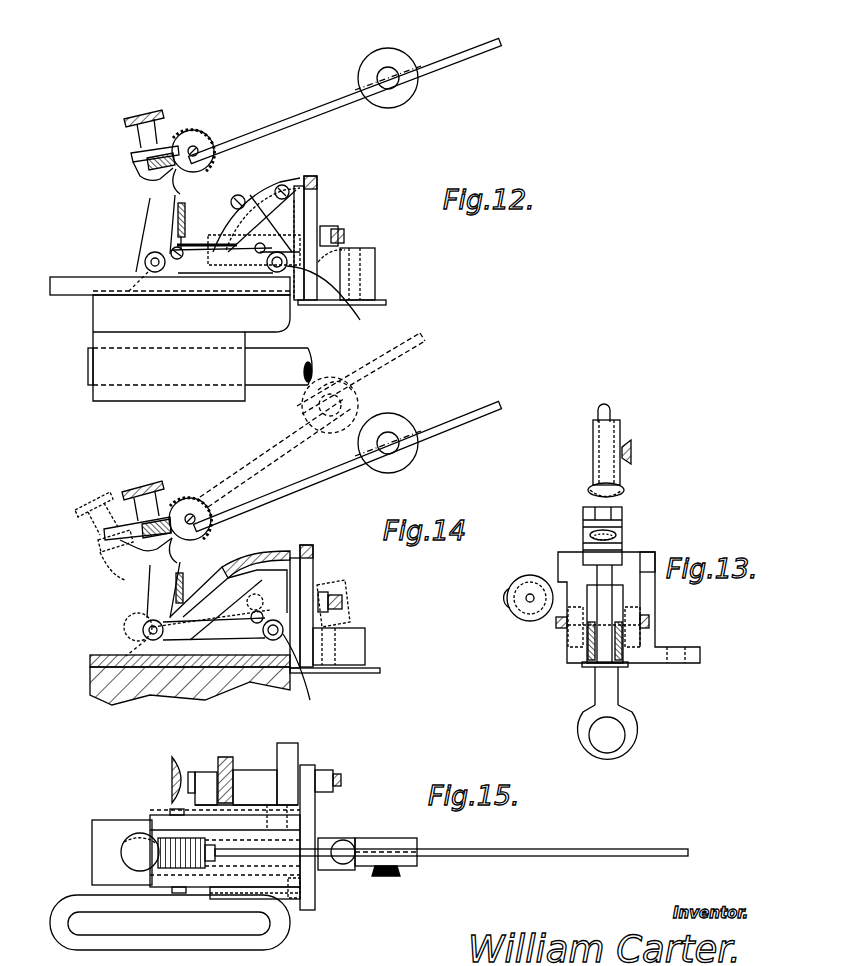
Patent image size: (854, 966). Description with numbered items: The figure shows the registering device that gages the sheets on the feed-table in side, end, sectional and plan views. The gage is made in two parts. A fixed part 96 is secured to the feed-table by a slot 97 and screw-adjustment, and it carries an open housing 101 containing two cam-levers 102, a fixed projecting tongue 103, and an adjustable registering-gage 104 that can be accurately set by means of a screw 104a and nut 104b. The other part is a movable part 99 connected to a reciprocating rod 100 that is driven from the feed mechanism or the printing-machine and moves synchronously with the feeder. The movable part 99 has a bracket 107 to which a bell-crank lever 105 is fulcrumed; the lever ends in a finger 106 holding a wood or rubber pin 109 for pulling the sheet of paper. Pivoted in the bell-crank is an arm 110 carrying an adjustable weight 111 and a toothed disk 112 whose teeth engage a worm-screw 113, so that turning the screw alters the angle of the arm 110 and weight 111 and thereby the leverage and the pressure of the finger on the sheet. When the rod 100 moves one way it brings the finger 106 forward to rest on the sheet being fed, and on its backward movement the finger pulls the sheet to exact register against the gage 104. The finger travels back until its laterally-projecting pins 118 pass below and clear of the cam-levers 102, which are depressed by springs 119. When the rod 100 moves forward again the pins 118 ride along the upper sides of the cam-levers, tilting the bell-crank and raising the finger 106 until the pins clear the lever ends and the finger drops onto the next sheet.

In FIG. 12, the fixed part 96 is at (254, 209).
In FIG. 14, the fixed part 96 is at (230, 581).
In FIG. 13, the fixed part 96 is at (624, 536).
In FIG. 15, the fixed part 96 is at (196, 848).
In FIG. 15, the slot 97 is at (256, 922).
In FIG. 12, the movable part 99 is at (189, 348).
In FIG. 13, the movable part 99 is at (620, 714).
In FIG. 12, the reciprocating rod 100 is at (298, 362).
In FIG. 12, the open housing 101 is at (325, 210).
In FIG. 14, the open housing 101 is at (298, 548).
In FIG. 13, the open housing 101 is at (628, 578).
In FIG. 15, the open housing 101 is at (268, 862).
In FIG. 12, the cam-levers 102 is at (236, 262).
In FIG. 14, the cam-levers 102 is at (250, 645).
In FIG. 12, the fixed projecting tongue 103 is at (388, 304).
In FIG. 14, the fixed projecting tongue 103 is at (383, 670).
In FIG. 12, the adjustable registering-gage 104 is at (322, 180).
In FIG. 14, the adjustable registering-gage 104 is at (316, 576).
In FIG. 15, the adjustable registering-gage 104 is at (318, 893).
In FIG. 12, the screw 104a is at (142, 172).
In FIG. 14, the screw 104a is at (135, 548).
In FIG. 13, the screw 104a is at (530, 576).
In FIG. 15, the screw 104a is at (172, 772).
In FIG. 15, the nut 104b is at (239, 767).
In FIG. 12, the bell-crank lever 105 is at (150, 226).
In FIG. 14, the bell-crank lever 105 is at (160, 585).
In FIG. 13, the bell-crank lever 105 is at (577, 616).
In FIG. 12, the finger 106 is at (380, 275).
In FIG. 14, the finger 106 is at (340, 632).
In FIG. 15, the finger 106 is at (328, 810).
In FIG. 14, the bracket 107 is at (125, 658).
In FIG. 13, the bracket 107 is at (595, 680).
In FIG. 12, the pin 109 is at (347, 256).
In FIG. 14, the pin 109 is at (352, 668).
In FIG. 15, the pin 109 is at (348, 842).
In FIG. 12, the arm 110 is at (296, 112).
In FIG. 14, the arm 110 is at (323, 472).
In FIG. 13, the arm 110 is at (610, 412).
In FIG. 15, the arm 110 is at (452, 852).
In FIG. 12, the adjustable weight 111 is at (405, 94).
In FIG. 14, the adjustable weight 111 is at (410, 466).
In FIG. 13, the adjustable weight 111 is at (622, 444).
In FIG. 15, the adjustable weight 111 is at (416, 845).
In FIG. 12, the toothed disk 112 is at (361, 373).
In FIG. 14, the toothed disk 112 is at (212, 500).
In FIG. 15, the toothed disk 112 is at (212, 852).
In FIG. 12, the worm-screw 113 is at (148, 118).
In FIG. 14, the worm-screw 113 is at (143, 485).
In FIG. 13, the worm-screw 113 is at (624, 492).
In FIG. 15, the worm-screw 113 is at (138, 855).
In FIG. 12, the laterally-projecting pins 118 is at (337, 303).
In FIG. 14, the laterally-projecting pins 118 is at (315, 679).
In FIG. 13, the laterally-projecting pins 118 is at (640, 637).
In FIG. 12, the springs 119 is at (205, 207).